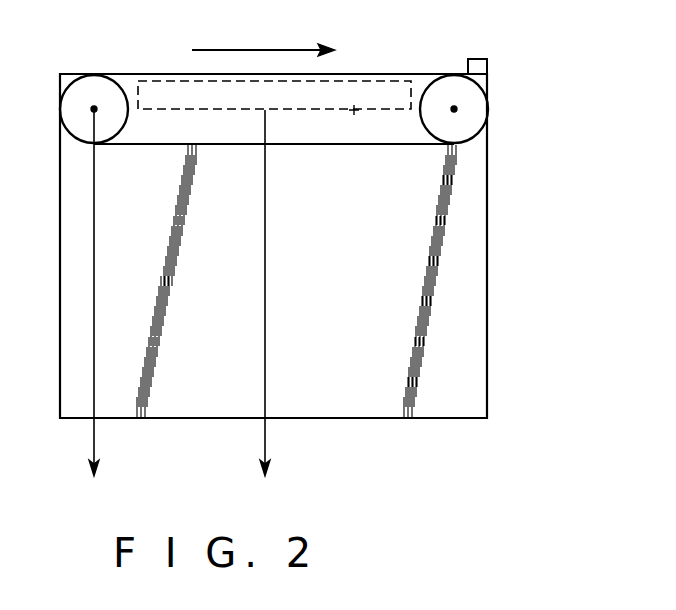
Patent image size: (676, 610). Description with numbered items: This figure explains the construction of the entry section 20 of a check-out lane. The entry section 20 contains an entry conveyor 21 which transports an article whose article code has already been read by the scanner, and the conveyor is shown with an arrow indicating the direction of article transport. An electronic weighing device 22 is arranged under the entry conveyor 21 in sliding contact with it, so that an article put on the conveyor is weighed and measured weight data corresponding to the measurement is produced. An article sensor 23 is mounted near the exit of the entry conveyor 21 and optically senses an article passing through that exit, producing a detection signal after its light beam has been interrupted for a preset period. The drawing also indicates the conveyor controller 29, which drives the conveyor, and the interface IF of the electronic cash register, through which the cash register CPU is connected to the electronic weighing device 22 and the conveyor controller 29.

The entry section 20 is at (478, 289).
The entry conveyor 21 is at (357, 74).
The electronic weighing device 22 is at (357, 114).
The article sensor 23 is at (489, 62).
The conveyor controller 29 is at (94, 310).
The interface IF is at (261, 310).